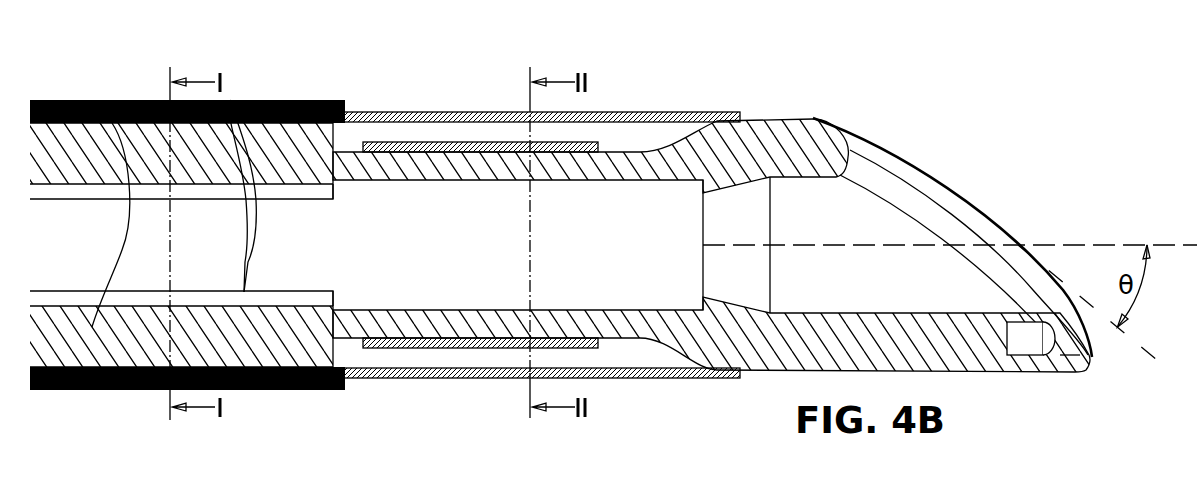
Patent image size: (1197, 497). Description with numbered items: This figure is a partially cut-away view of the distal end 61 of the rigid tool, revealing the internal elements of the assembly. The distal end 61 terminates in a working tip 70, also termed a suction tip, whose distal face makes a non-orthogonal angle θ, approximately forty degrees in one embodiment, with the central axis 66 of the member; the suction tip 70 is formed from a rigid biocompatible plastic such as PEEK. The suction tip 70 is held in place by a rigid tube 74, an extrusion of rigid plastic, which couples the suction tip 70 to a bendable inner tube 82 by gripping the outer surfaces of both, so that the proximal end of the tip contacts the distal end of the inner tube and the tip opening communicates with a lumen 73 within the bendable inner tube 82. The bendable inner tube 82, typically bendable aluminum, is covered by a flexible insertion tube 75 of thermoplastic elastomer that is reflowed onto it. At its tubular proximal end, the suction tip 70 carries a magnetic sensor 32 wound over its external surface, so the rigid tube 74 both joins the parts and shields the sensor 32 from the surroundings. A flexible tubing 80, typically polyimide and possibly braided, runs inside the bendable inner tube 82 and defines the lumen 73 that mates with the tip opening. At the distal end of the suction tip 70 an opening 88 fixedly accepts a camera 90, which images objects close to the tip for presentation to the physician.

The magnetic sensor 32 is at (398, 144).
The distal end 61 is at (647, 418).
The central axis 66 is at (1100, 244).
The working tip 70 is at (785, 118).
The lumen 73 is at (288, 254).
The rigid tube 74 is at (297, 100).
The flexible insertion tube 75 is at (72, 100).
The flexible tubing 80 is at (230, 100).
The bendable inner tube 82 is at (85, 153).
The opening 88 is at (1072, 357).
The camera 90 is at (1020, 343).